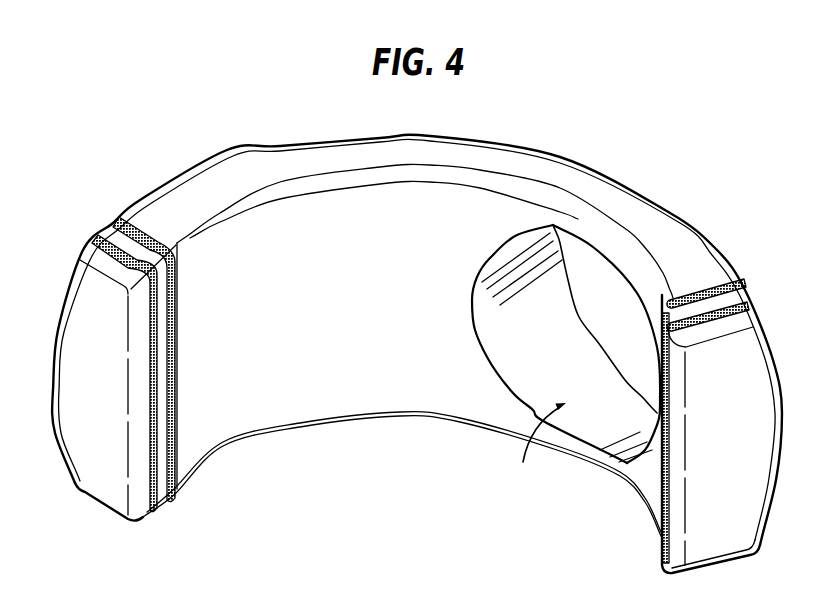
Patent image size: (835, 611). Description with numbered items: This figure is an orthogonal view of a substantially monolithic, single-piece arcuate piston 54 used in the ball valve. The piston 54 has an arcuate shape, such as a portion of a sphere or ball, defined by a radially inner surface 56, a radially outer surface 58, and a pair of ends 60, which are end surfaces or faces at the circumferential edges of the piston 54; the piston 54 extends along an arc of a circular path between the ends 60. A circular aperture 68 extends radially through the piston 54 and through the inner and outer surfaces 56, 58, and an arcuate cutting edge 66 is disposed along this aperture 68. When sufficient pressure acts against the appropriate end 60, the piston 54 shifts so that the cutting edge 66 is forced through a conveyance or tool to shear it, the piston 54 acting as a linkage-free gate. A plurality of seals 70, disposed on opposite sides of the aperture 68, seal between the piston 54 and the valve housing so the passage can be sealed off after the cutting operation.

The arcuate piston 54 is at (226, 146).
The radially inner surface 56 is at (224, 433).
The radially outer surface 58 is at (66, 290).
The ends 60 is at (106, 404).
The cutting edge 66 is at (553, 265).
The aperture 68 is at (539, 448).
The seal 70 is at (157, 343).